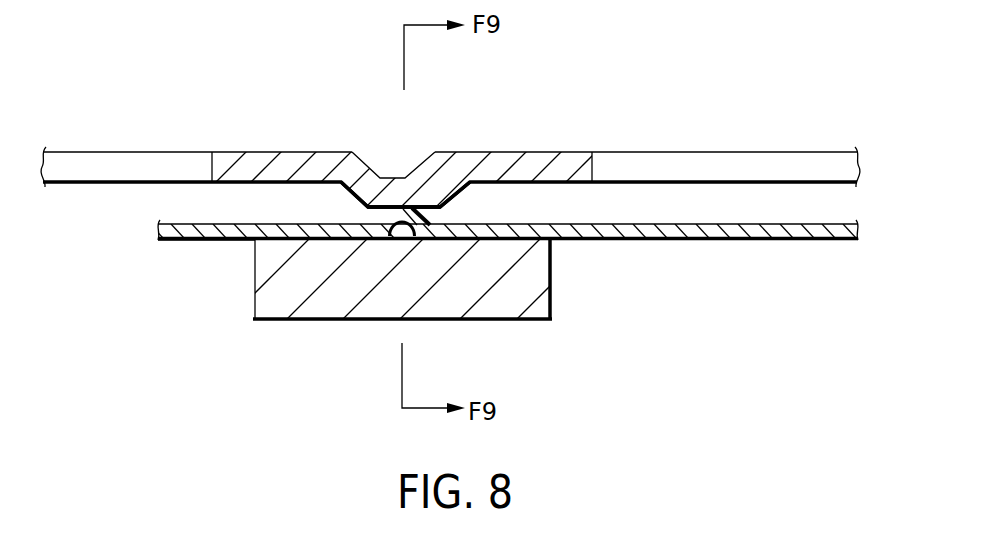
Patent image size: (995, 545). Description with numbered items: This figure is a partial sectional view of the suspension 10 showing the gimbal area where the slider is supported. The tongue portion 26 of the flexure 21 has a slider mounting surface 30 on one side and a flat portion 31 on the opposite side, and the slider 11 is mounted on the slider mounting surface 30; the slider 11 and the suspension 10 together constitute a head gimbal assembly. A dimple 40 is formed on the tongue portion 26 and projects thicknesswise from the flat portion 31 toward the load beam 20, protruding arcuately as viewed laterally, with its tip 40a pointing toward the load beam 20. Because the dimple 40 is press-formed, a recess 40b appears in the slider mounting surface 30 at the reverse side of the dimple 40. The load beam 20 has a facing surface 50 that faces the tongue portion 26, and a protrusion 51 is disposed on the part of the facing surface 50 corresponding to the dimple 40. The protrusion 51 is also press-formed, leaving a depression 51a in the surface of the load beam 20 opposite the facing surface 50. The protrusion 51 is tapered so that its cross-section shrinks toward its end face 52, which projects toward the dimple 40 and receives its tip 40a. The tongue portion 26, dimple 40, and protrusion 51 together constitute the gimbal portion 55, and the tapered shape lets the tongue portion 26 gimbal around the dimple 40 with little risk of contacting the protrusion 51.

The suspension 10 is at (603, 96).
The slider 11 is at (524, 321).
The load beam 20 is at (257, 152).
The flexure 21 is at (470, 281).
The tongue portion 26 is at (230, 240).
The slider mounting surface 30 is at (413, 309).
The flat portion 31 is at (217, 225).
The dimple 40 is at (450, 232).
The tip 40a is at (410, 207).
The recess 40b is at (407, 243).
The facing surface 50 is at (232, 189).
The protrusion 51 is at (355, 197).
The depression 51a is at (380, 157).
The end face 52 is at (372, 215).
The gimbal portion 55 is at (455, 216).